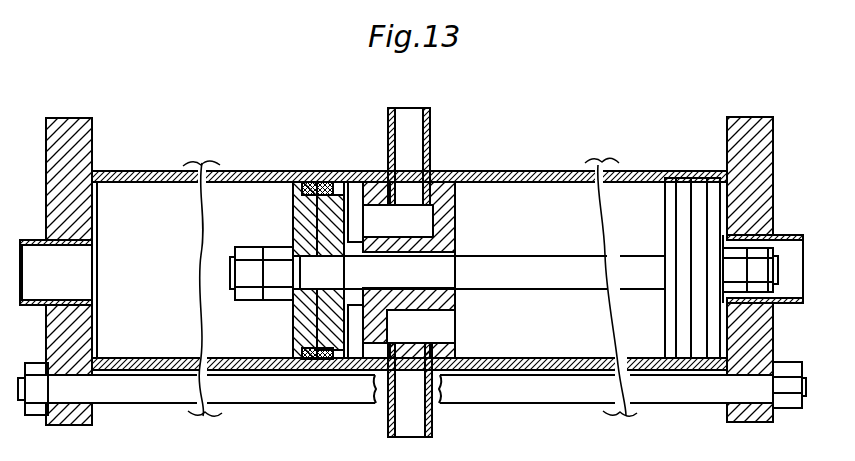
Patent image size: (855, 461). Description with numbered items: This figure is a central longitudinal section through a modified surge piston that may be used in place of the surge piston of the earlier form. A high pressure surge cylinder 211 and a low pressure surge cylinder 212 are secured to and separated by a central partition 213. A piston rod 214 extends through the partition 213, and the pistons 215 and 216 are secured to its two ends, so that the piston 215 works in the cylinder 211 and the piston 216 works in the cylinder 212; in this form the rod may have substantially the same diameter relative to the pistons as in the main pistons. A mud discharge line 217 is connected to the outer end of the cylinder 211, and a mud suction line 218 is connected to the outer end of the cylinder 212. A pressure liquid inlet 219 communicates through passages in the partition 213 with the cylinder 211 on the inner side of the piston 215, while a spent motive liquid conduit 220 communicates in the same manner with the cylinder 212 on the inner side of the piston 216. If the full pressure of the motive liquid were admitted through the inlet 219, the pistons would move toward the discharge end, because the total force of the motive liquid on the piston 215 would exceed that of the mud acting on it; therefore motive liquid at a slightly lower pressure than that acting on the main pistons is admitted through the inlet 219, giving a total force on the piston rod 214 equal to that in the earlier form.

The high pressure surge cylinder 211 is at (248, 176).
The low pressure surge cylinder 212 is at (573, 171).
The central partition 213 is at (455, 196).
The piston rod 214 is at (553, 263).
The piston 215 is at (331, 182).
The piston 216 is at (684, 190).
The mud discharge line 217 is at (32, 254).
The mud suction line 218 is at (784, 234).
The pressure liquid inlet 219 is at (415, 124).
The spent motive liquid conduit 220 is at (412, 423).